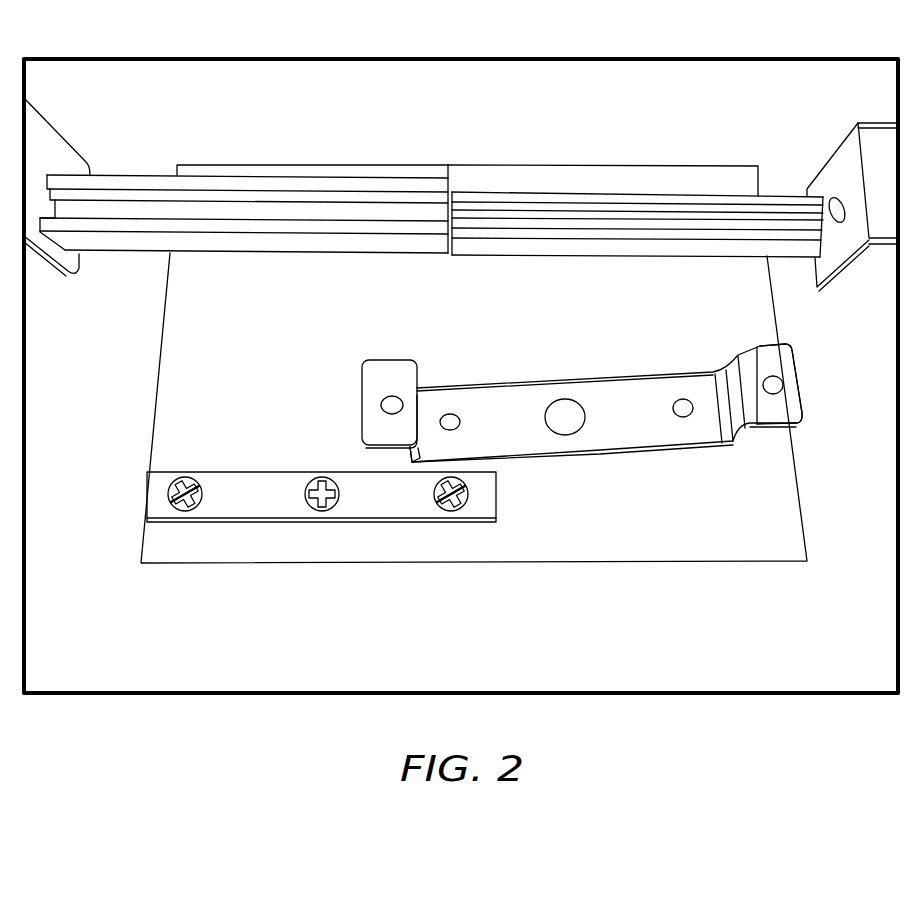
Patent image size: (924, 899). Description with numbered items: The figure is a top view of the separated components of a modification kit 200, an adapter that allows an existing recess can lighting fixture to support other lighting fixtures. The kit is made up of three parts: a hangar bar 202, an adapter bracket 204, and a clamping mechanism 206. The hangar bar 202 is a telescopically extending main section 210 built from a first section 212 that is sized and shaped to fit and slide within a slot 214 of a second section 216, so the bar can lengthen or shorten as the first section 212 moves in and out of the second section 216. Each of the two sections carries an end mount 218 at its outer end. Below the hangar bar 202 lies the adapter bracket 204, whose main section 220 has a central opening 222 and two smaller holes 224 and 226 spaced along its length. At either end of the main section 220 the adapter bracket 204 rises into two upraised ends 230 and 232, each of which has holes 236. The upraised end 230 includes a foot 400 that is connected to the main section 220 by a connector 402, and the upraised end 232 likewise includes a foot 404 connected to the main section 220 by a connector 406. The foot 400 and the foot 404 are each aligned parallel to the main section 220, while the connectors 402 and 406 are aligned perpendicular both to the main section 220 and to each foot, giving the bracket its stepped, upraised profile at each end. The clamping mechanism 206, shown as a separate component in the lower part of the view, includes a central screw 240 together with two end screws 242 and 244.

The modification kit 200 is at (122, 378).
The hangar bar 202 is at (494, 218).
The adapter bracket 204 is at (573, 403).
The clamping mechanism 206 is at (237, 523).
The main section 210 is at (606, 234).
The first section 212 is at (195, 184).
The slot 214 is at (328, 212).
The second section 216 is at (598, 216).
The end mount 218 is at (48, 146).
The main section 220 is at (541, 388).
The central opening 222 is at (561, 432).
The hole 224 is at (456, 413).
The hole 226 is at (685, 418).
The upraised end 230 is at (372, 376).
The upraised end 232 is at (757, 350).
The holes 236 is at (382, 404).
The central screw 240 is at (322, 520).
The end screw 242 is at (183, 514).
The end screw 244 is at (452, 520).
The foot 400 is at (360, 369).
The connector 402 is at (422, 454).
The foot 404 is at (734, 403).
The connector 406 is at (740, 375).